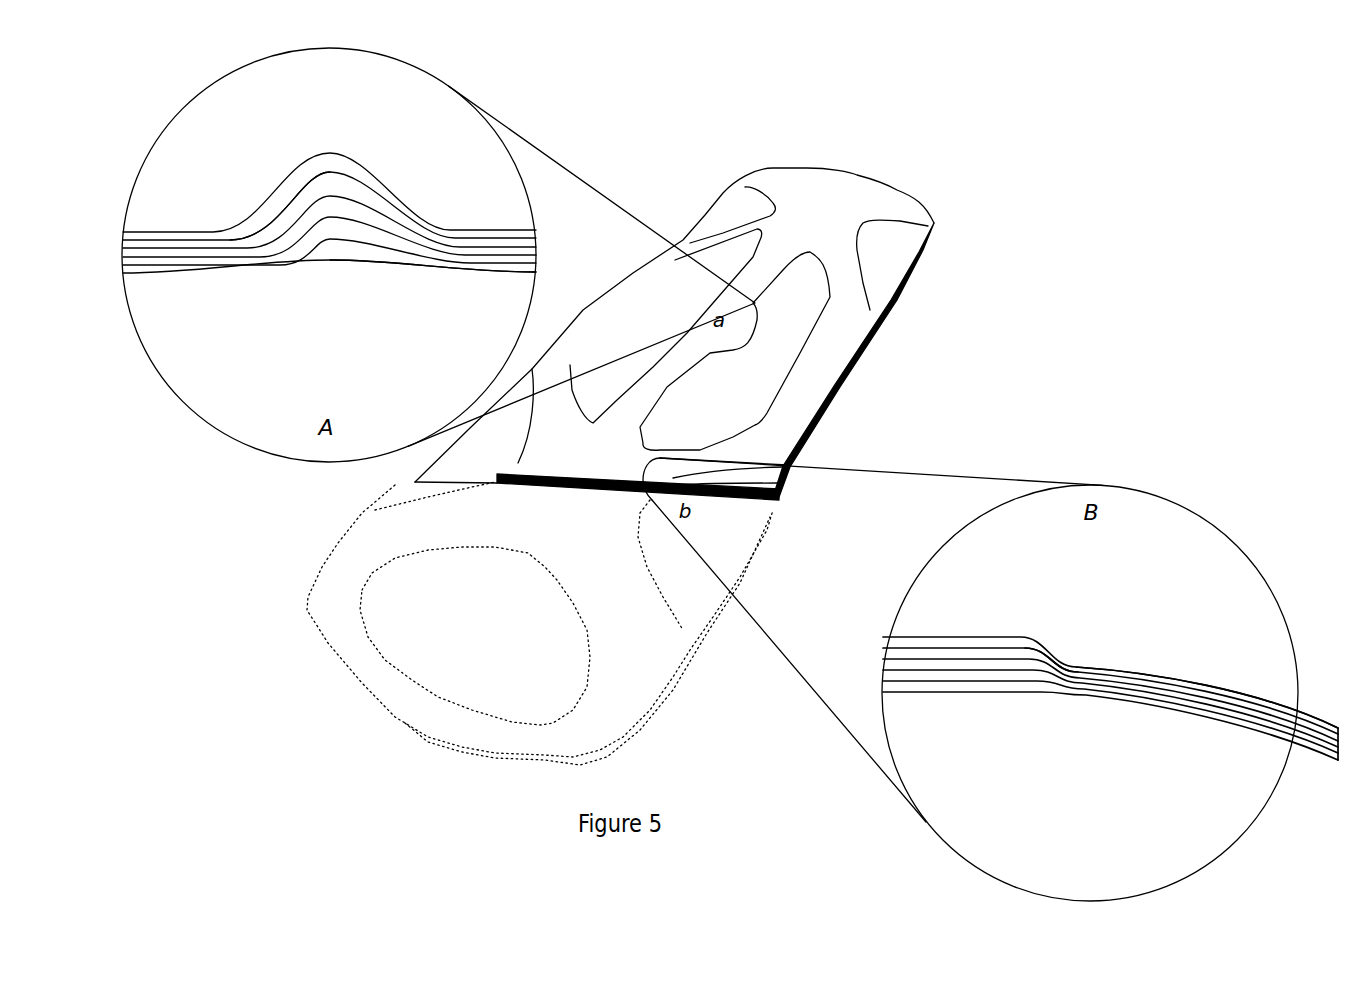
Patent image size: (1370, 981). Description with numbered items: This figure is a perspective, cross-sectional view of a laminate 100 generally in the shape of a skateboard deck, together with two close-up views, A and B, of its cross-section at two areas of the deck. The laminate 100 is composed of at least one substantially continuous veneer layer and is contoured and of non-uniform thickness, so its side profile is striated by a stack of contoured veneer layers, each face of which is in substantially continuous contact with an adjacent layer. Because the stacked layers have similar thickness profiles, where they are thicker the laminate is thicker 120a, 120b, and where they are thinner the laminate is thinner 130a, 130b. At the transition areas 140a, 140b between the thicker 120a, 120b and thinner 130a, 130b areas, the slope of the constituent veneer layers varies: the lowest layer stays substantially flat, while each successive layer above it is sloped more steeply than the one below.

The laminate 100 is at (793, 185).
The thicker area of the laminate 120a is at (333, 153).
The thicker area of the laminate 120b is at (940, 636).
The thinner area of the laminate 130a is at (442, 267).
The thinner area of the laminate 130b is at (1138, 668).
The transition area 140a is at (282, 181).
The transition area 140b is at (1052, 648).